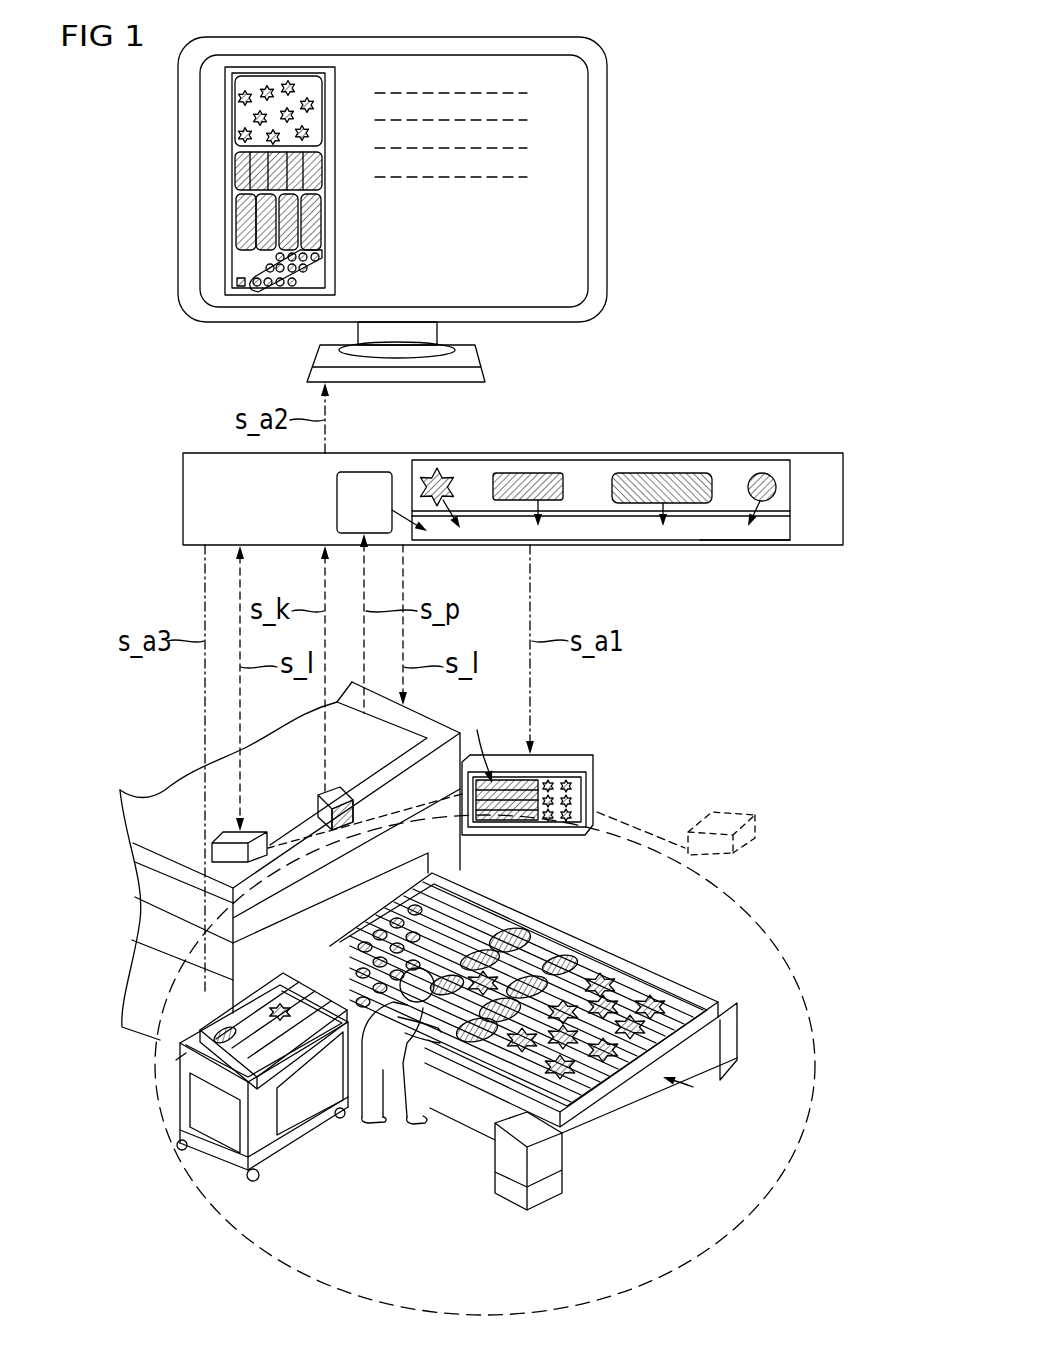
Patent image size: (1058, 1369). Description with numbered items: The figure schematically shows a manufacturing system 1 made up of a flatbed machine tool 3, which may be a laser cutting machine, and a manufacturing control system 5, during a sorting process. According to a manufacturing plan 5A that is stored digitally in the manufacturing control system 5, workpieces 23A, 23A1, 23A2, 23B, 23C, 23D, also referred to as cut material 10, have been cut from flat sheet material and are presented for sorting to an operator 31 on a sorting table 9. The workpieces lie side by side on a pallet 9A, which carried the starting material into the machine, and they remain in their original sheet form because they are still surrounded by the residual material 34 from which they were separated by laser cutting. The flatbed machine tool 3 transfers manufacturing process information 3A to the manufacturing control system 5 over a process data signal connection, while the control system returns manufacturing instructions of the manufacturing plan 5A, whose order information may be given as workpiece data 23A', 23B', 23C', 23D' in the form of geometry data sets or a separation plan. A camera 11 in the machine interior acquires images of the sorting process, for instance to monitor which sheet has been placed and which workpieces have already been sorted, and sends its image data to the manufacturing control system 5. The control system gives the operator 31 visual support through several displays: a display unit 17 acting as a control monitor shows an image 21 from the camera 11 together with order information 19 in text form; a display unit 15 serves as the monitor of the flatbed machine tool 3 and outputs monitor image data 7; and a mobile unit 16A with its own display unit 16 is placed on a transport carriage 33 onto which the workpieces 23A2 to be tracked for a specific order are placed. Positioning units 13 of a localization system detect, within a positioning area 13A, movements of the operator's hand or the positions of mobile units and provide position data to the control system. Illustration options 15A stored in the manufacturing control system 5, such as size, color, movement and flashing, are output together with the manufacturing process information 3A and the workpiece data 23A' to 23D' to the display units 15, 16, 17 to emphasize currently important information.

The manufacturing system 1 is at (736, 234).
The flatbed machine tool 3 is at (205, 1230).
The manufacturing process information 3A is at (377, 472).
The manufacturing control system 5 is at (612, 460).
The manufacturing plan 5A is at (793, 493).
The monitor image data 7 is at (478, 744).
The sorting table 9 is at (693, 1087).
The pallet 9A is at (557, 1073).
The cut material 10 is at (717, 997).
The camera 11 is at (335, 792).
The positioning units 13 is at (250, 830).
The positioning area 13A is at (778, 1183).
The display unit 15 is at (575, 755).
The illustration options 15A is at (750, 545).
The display unit 16 is at (230, 1020).
The mobile unit 16A is at (172, 1063).
The display unit 17 is at (607, 181).
The order information 19 is at (500, 183).
The image 21 is at (224, 178).
The workpiece 23A is at (600, 1007).
The workpiece data 23A' is at (451, 466).
The workpiece 23A1 is at (470, 1053).
The workpiece 23A2 is at (283, 1010).
The workpiece 23B is at (631, 961).
The workpiece data 23B' is at (534, 465).
The workpiece 23C is at (514, 970).
The workpiece data 23C' is at (668, 465).
The workpiece 23D is at (440, 936).
The workpiece data 23D' is at (769, 465).
The operator 31 is at (377, 1117).
The transport carriage 33 is at (287, 1155).
The residual material 34 is at (527, 1070).